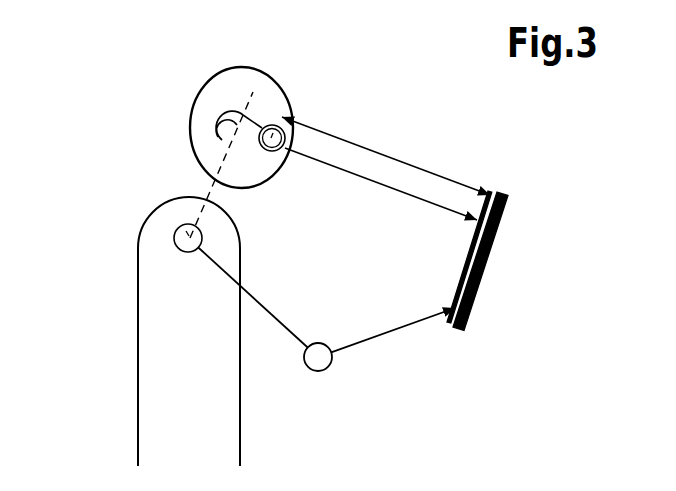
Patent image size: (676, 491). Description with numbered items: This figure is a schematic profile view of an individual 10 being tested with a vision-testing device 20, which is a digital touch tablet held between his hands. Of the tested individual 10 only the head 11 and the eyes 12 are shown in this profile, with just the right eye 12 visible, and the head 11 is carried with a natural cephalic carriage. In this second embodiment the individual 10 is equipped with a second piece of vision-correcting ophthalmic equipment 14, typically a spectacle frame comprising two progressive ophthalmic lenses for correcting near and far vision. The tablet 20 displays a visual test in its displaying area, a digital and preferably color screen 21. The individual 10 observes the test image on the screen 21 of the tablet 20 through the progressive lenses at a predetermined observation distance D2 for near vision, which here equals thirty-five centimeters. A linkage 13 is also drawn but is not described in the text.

The individual 10 is at (134, 230).
The head 11 is at (222, 72).
The eye 12 is at (262, 150).
The connecting linkage 13 is at (450, 304).
The second piece of vision-correcting ophthalmic equipment 14 is at (260, 118).
The vision-testing device 20 is at (506, 232).
The screen 21 is at (472, 242).
The observation distance D2 is at (372, 151).